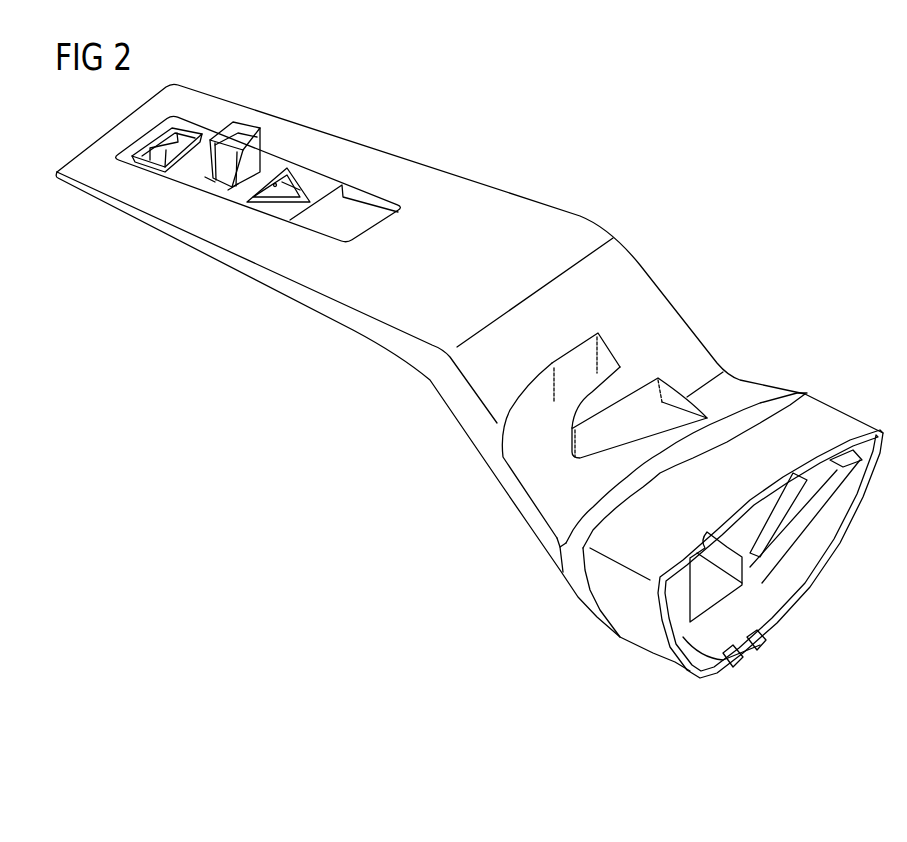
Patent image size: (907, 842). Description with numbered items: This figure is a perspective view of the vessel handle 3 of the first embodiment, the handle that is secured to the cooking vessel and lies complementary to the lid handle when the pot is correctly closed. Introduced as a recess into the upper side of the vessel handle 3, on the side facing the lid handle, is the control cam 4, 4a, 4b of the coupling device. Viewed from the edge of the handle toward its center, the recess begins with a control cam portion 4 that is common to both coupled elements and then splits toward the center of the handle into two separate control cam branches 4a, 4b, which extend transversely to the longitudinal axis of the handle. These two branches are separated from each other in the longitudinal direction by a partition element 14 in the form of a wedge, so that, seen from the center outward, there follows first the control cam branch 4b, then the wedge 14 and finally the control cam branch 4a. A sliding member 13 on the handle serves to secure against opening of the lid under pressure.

The vessel handle 3 is at (462, 237).
The sliding member 13 is at (268, 172).
The control cam portion 4 is at (548, 488).
The control cam branch 4a is at (583, 360).
The control cam branch 4b is at (650, 435).
The partition element 14 is at (613, 395).